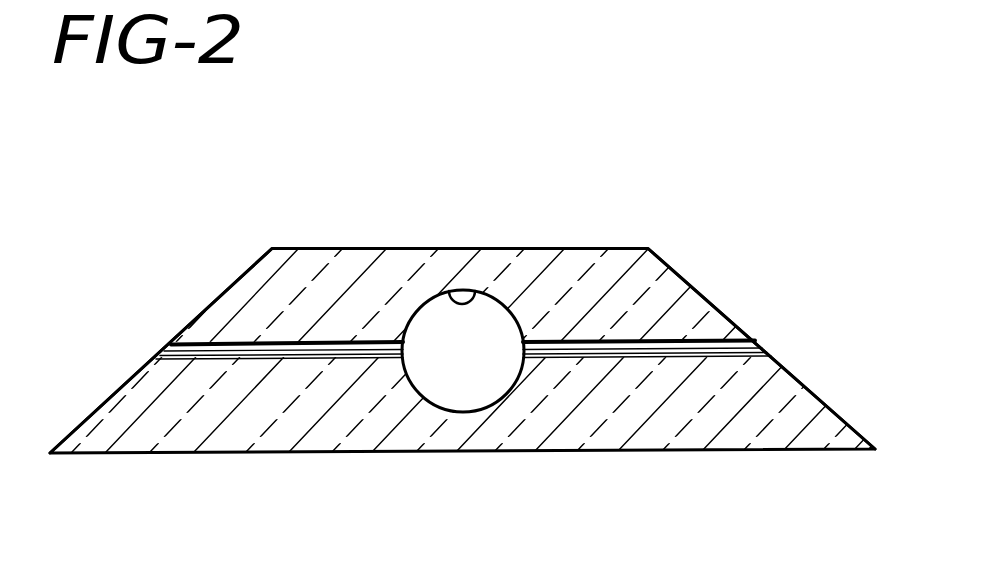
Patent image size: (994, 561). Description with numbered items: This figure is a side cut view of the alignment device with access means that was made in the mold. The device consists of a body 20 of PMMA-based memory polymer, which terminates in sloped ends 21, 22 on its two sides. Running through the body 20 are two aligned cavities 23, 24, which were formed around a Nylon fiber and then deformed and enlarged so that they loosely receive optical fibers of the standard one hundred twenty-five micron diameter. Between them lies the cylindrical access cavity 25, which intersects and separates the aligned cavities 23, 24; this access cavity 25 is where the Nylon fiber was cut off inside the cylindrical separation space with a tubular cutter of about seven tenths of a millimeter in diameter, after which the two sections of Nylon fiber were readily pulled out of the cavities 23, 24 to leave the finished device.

The body 20 is at (545, 247).
The sloped end 21 is at (208, 308).
The sloped end 22 is at (703, 313).
The aligned cavity 23 is at (356, 349).
The aligned cavity 24 is at (592, 349).
The cylindrical access cavity 25 is at (448, 290).